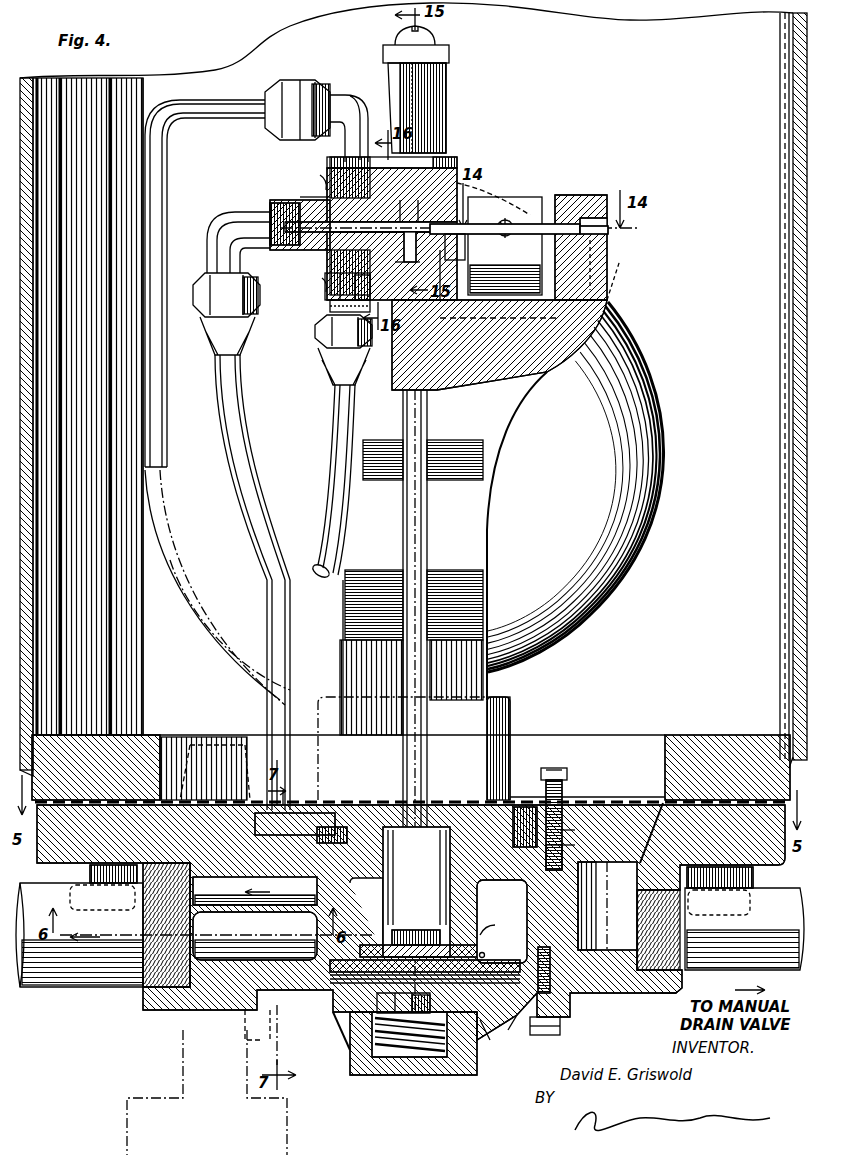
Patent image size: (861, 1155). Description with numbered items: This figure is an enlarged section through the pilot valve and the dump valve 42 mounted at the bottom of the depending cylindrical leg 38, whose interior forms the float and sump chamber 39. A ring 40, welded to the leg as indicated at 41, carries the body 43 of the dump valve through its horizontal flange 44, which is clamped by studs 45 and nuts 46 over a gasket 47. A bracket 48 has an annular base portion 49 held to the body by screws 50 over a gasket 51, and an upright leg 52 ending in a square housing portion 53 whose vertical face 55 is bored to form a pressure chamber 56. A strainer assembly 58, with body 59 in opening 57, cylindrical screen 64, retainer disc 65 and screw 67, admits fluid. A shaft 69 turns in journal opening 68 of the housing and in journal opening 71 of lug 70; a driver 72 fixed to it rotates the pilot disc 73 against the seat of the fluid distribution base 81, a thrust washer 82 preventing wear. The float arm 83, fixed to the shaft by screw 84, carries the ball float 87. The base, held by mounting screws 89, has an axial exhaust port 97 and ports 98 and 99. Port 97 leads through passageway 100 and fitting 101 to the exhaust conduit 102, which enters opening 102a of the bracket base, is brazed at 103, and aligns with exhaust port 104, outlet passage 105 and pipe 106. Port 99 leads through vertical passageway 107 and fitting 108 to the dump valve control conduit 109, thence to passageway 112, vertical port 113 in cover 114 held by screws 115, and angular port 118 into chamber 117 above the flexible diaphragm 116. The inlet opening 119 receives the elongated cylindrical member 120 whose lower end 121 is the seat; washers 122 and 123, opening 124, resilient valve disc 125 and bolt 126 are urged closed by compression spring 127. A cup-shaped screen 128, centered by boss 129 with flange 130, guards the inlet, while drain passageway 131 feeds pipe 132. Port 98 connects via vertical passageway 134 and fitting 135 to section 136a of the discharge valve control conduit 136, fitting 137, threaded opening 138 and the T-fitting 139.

The depending cylindrical leg 38 is at (793, 43).
The chamber 39 is at (633, 22).
The ring 40 is at (672, 735).
The weld 41 is at (425, 790).
The dump valve 42 is at (375, 1075).
The body 43 is at (625, 1000).
The horizontal flange 44 is at (772, 868).
The studs 45 is at (110, 920).
The nuts 46 is at (72, 875).
The gasket 47 is at (648, 793).
The bracket 48 is at (492, 510).
The annular base portion 49 is at (578, 835).
The screws 50 is at (560, 772).
The gasket 51 is at (578, 850).
The upright leg 52 is at (523, 415).
The housing portion 53 is at (460, 175).
The vertical face 55 is at (405, 280).
The pressure chamber 56 is at (446, 275).
The opening 57 is at (429, 211).
The strainer assembly 58 is at (452, 88).
The body 59 is at (455, 160).
The cylindrical screen 64 is at (452, 70).
The screen retainer disc 65 is at (438, 44).
The screw 67 is at (405, 28).
The journal opening 68 is at (470, 235).
The shaft 69 is at (608, 232).
The lug 70 is at (600, 182).
The journal opening 71 is at (607, 262).
The driver 72 is at (460, 218).
The pilot disc 73 is at (395, 252).
The fluid distribution base 81 is at (268, 204).
The thrust washer 82 is at (468, 248).
The float arm 83 is at (527, 197).
The screw 84 is at (502, 220).
The ball float 87 is at (648, 508).
The mounting screws 89 is at (316, 180).
The axial exhaust port 97 is at (300, 225).
The port 98 is at (350, 190).
The port 99 is at (350, 272).
The passageway 100 is at (285, 191).
The fitting 101 is at (232, 215).
The exhaust conduit 102 is at (245, 425).
The opening 102a is at (300, 823).
The soldering or brazing 103 is at (297, 795).
The exhaust port 104 is at (300, 870).
The outlet passage 105 is at (300, 952).
The pipe 106 is at (78, 990).
The vertical passageway 107 is at (325, 308).
The fitting 108 is at (328, 330).
The dump valve control conduit 109 is at (338, 458).
The passageway 112 is at (280, 952).
The vertical port 113 is at (255, 1043).
The cover 114 is at (527, 1035).
The screws 115 is at (562, 1025).
The flexible diaphragm 116 is at (572, 1000).
The chamber 117 is at (340, 1030).
The angular port 118 is at (288, 1040).
The inlet opening 119 is at (448, 790).
The elongated cylindrical member 120 is at (477, 900).
The valve seat 121 is at (494, 933).
The washer 122 is at (485, 953).
The washer 123 is at (498, 1038).
The opening 124 is at (510, 970).
The resilient valve disc 125 is at (365, 955).
The bolt 126 is at (428, 945).
The compression spring 127 is at (420, 1057).
The cup-shaped screen 128 is at (512, 703).
The boss 129 is at (505, 820).
The flange 130 is at (542, 860).
The drain passageway 131 is at (632, 835).
The pipe 132 is at (720, 975).
The vertical passageway 134 is at (325, 162).
The fitting 135 is at (345, 95).
The discharge valve control conduit 136 is at (170, 196).
The conduit section 136a is at (165, 170).
The fitting 137 is at (165, 845).
The threaded opening 138 is at (255, 886).
The T-fitting 139 is at (152, 1105).